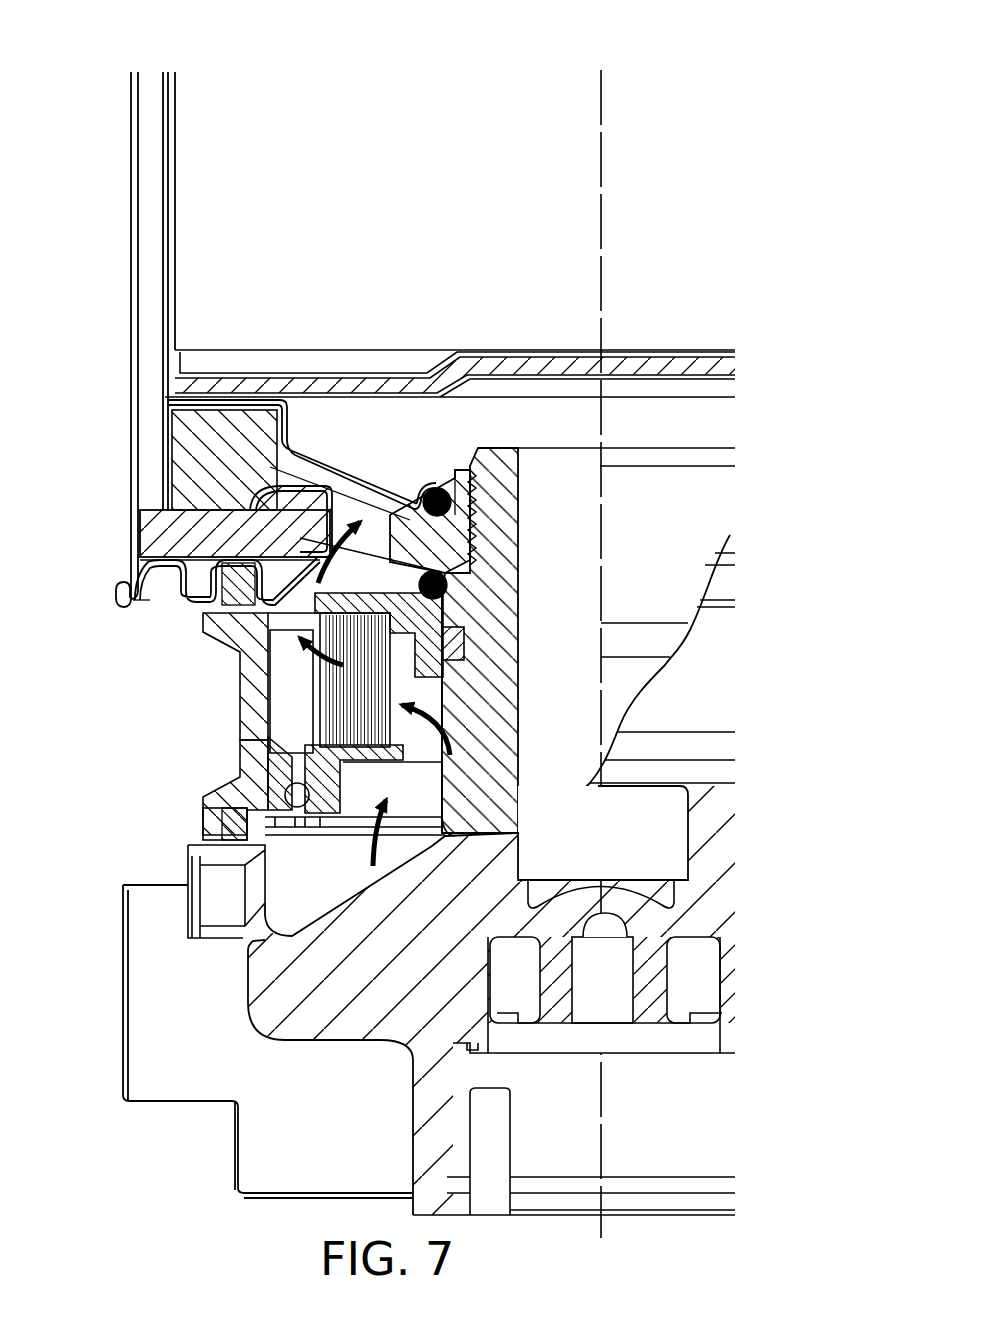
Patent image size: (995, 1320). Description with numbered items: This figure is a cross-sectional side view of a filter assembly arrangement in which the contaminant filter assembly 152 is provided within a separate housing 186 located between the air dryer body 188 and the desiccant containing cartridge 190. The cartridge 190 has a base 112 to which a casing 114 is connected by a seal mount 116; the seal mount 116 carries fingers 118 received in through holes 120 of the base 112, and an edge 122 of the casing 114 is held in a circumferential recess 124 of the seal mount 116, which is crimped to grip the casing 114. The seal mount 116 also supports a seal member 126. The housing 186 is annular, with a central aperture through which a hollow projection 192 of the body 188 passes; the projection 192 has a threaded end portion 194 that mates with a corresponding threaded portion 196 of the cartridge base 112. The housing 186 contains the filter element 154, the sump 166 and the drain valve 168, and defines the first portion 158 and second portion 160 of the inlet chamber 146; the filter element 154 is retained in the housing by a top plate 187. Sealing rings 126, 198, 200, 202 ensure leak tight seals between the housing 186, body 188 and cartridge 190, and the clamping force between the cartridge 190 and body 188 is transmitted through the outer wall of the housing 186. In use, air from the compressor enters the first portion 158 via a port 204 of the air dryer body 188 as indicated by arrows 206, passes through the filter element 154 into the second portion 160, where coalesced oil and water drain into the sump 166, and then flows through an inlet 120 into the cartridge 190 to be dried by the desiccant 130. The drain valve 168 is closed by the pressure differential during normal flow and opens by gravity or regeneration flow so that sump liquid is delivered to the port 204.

The base 112 is at (140, 526).
The casing 114 is at (131, 258).
The seal mount 116 is at (180, 601).
The fingers 118 is at (342, 462).
The through holes 120 is at (371, 488).
The edge 122 is at (128, 603).
The circumferential recess 124 is at (118, 589).
The seal member 126 is at (205, 636).
The desiccant 130 is at (402, 241).
The inlet chamber 146 is at (450, 713).
The contaminant filter assembly 152 is at (392, 689).
The filter element 154 is at (443, 611).
The first portion 158 is at (424, 779).
The second portion 160 is at (280, 676).
The sump 166 is at (252, 752).
The drain valve 168 is at (276, 787).
The housing 186 is at (240, 696).
The top plate 187 is at (290, 546).
The air dryer body 188 is at (218, 945).
The desiccant containing cartridge 190 is at (256, 76).
The hollow projection 192 is at (519, 558).
The threaded end portion 194 is at (470, 476).
The threaded portion 196 is at (480, 506).
The sealing ring 198 is at (446, 587).
The sealing ring 200 is at (410, 656).
The sealing ring 202 is at (205, 820).
The port 204 is at (277, 901).
The arrows 206 is at (378, 498).